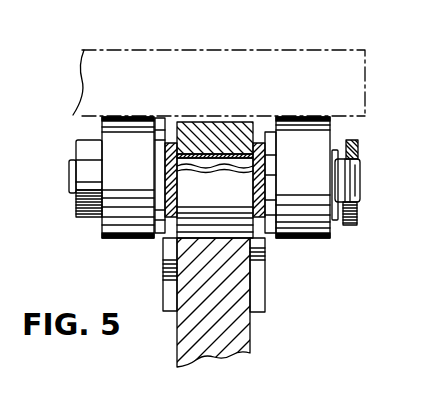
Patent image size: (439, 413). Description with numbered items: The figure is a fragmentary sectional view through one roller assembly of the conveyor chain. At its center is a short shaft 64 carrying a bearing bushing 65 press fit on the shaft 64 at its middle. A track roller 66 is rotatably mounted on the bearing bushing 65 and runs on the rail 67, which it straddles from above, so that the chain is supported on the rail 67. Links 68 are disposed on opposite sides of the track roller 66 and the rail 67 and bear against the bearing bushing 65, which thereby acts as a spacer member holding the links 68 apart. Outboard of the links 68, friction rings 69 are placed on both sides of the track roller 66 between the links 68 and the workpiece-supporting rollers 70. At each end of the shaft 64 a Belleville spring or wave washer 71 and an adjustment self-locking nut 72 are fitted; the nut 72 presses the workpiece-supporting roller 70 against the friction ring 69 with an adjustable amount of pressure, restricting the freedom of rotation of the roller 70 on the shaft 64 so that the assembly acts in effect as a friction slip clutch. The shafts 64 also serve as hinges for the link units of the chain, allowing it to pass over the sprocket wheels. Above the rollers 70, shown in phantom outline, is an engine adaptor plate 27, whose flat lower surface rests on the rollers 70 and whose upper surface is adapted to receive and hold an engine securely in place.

The engine adaptor plate 27 is at (302, 61).
The short shaft 64 is at (361, 171).
The bearing bushing 65 is at (217, 122).
The track roller 66 is at (192, 120).
The rail 67 is at (250, 337).
The links 68 is at (163, 279).
The friction ring 69 is at (160, 116).
The workpiece-supporting roller 70 is at (102, 122).
The Belleville spring or wave washer 71 is at (339, 208).
The adjustment self-locking nut 72 is at (357, 212).